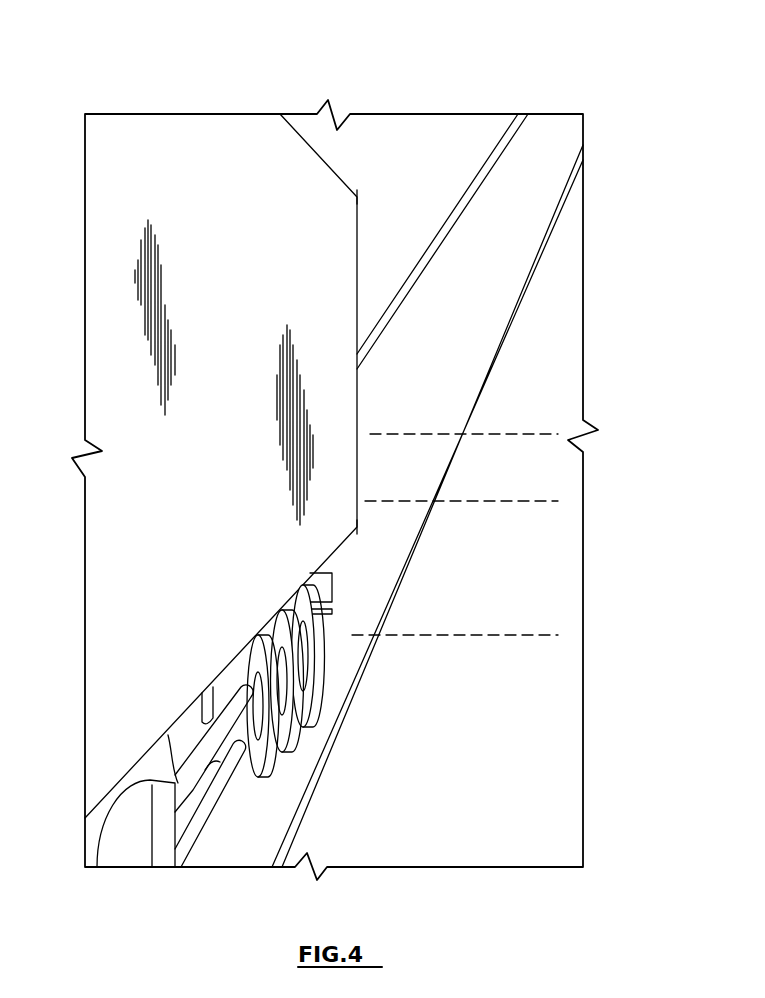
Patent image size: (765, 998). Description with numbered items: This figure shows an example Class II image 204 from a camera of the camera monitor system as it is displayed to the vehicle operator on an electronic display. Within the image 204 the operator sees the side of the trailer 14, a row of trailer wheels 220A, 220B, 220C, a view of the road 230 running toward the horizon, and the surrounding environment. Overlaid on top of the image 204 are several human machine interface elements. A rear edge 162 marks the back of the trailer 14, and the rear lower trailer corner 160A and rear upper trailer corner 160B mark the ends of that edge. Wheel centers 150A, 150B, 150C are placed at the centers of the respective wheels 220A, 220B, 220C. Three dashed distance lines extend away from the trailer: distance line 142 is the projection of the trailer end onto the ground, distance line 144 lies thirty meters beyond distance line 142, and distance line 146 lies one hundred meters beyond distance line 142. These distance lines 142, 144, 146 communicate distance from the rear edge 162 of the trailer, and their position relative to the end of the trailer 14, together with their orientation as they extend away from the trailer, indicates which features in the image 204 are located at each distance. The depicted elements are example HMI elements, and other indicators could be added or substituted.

The Class II image 204 is at (110, 66).
The trailer 14 is at (113, 370).
The rear edge 162 is at (357, 253).
The road 230 is at (547, 145).
The rear upper trailer corner 160B is at (365, 192).
The rear lower trailer corner 160A is at (367, 540).
The distance line 146 is at (523, 434).
The distance line 144 is at (535, 501).
The distance line 142 is at (525, 635).
The trailer wheel 220C is at (334, 638).
The trailer wheel 220B is at (324, 666).
The trailer wheel 220A is at (314, 697).
The wheel center 150C is at (306, 655).
The wheel center 150B is at (285, 681).
The wheel center 150A is at (262, 705).